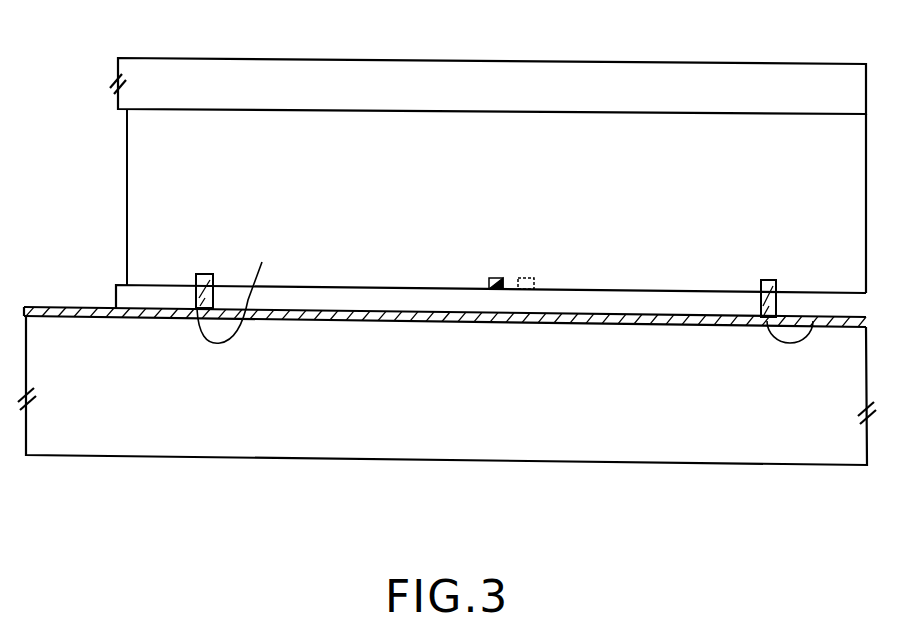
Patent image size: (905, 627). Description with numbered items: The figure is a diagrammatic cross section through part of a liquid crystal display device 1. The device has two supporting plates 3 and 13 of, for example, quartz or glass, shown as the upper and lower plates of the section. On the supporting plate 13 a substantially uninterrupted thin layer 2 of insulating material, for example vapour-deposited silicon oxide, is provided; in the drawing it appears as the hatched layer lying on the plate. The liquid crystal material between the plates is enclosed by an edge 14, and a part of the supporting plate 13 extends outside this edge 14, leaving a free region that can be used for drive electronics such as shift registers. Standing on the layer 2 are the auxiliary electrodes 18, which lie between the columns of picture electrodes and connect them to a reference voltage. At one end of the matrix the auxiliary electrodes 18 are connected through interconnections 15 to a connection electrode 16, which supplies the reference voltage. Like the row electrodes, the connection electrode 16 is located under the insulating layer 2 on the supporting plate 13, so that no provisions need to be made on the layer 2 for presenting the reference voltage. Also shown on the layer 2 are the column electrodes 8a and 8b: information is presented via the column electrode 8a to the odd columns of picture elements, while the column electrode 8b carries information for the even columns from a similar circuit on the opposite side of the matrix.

The liquid crystal display device 1 is at (133, 482).
The thin layer of insulating material 2 is at (334, 296).
The supporting plate 3 is at (557, 80).
The column electrode 8a is at (493, 278).
The column electrode 8b is at (531, 277).
The supporting plate 13 is at (225, 430).
The edge 14 is at (648, 138).
The interconnections 15 is at (813, 321).
The connection electrode 16 is at (393, 320).
The auxiliary electrodes 18 is at (207, 274).